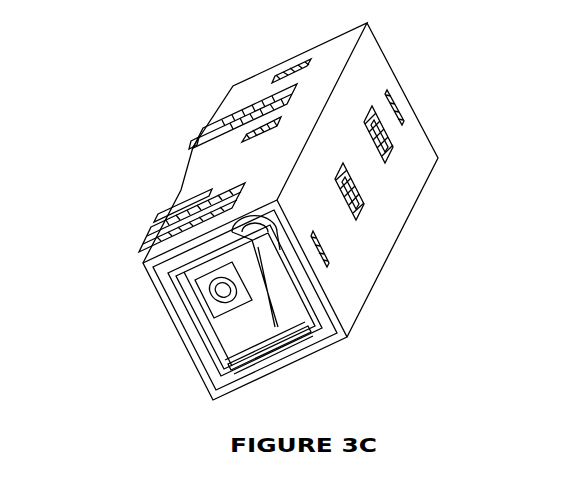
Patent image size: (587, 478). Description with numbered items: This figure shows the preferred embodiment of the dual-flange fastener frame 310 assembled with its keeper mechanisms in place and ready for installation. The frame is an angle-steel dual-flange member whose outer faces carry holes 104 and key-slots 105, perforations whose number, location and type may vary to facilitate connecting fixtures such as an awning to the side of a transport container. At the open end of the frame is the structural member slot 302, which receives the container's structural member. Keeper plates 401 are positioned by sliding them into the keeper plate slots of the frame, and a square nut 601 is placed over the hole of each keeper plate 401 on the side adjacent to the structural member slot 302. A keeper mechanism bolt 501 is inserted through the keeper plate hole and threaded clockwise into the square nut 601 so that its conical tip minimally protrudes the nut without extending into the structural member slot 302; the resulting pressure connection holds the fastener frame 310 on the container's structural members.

The dual-flange fastener frame 310 is at (424, 83).
The holes 104 is at (275, 70).
The key-slots 105 is at (388, 155).
The structural member slot 302 is at (278, 110).
The keeper plate 401 is at (193, 149).
The keeper mechanism bolt 501 is at (223, 292).
The square nut 601 is at (170, 315).